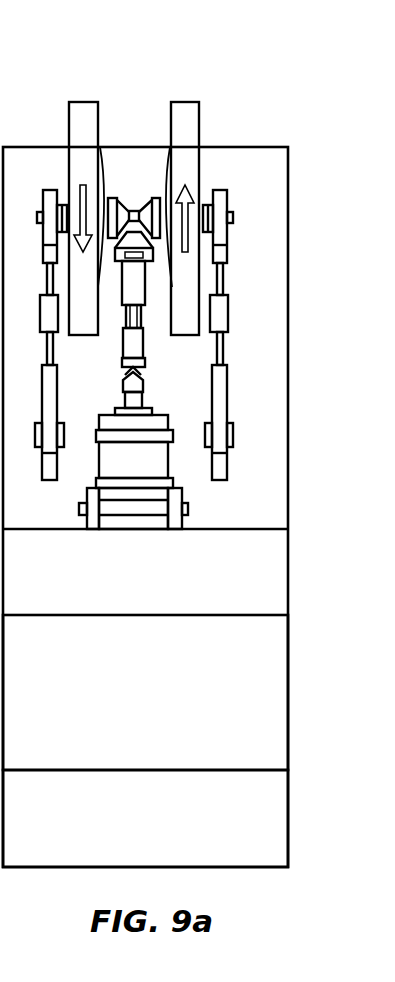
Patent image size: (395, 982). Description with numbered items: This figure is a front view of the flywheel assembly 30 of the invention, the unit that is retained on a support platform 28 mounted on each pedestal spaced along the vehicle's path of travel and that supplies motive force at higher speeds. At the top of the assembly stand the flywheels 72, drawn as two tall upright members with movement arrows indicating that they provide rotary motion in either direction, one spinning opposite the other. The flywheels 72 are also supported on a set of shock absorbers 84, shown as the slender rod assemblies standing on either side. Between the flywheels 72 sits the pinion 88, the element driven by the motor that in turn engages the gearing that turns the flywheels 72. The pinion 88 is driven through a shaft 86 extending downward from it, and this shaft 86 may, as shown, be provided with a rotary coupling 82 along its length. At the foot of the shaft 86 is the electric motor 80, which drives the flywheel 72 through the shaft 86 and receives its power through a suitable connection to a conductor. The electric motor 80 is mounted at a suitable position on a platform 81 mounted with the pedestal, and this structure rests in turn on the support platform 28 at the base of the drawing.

The flywheel assembly 30 is at (93, 57).
The flywheel 72 is at (185, 102).
The shock absorbers 84 is at (229, 313).
The pinion 88 is at (155, 258).
The shaft 86 is at (123, 343).
The rotary coupling 82 is at (148, 365).
The electric motor 80 is at (162, 458).
The platform 81 is at (283, 693).
The support platform 28 is at (283, 820).